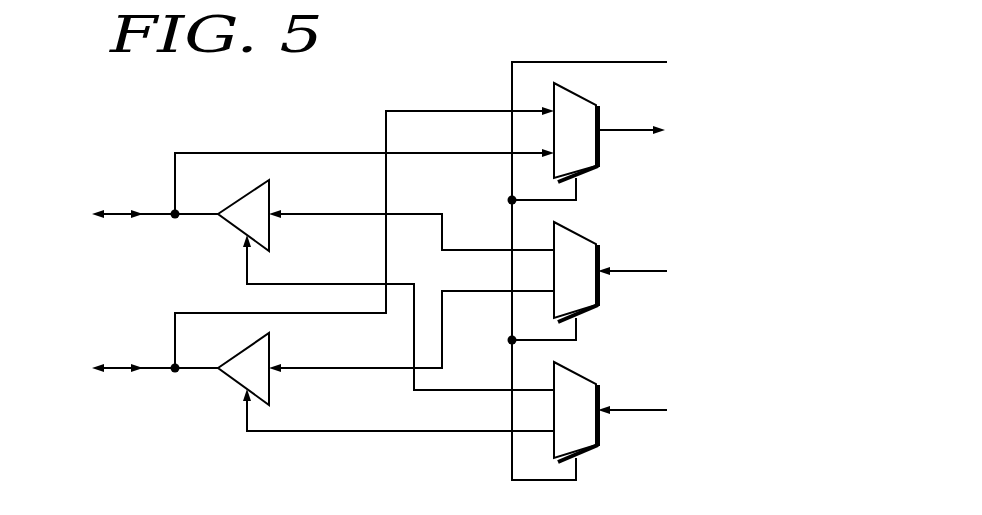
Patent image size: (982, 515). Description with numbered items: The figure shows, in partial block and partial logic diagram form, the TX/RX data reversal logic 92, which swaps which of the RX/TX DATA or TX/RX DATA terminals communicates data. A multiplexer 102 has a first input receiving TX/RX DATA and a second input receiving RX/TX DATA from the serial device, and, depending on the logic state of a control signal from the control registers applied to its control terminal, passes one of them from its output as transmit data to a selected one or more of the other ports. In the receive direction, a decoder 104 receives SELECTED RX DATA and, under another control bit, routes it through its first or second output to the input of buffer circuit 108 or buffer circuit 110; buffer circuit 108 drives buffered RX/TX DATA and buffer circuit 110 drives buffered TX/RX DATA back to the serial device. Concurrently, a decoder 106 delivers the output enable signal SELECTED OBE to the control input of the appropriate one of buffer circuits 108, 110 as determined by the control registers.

The TX/RX data reversal logic 92 is at (232, 104).
The multiplexer 102 is at (574, 91).
The decoder 104 is at (574, 230).
The decoder 106 is at (574, 370).
The buffer circuit 108 is at (250, 192).
The buffer circuit 110 is at (248, 347).